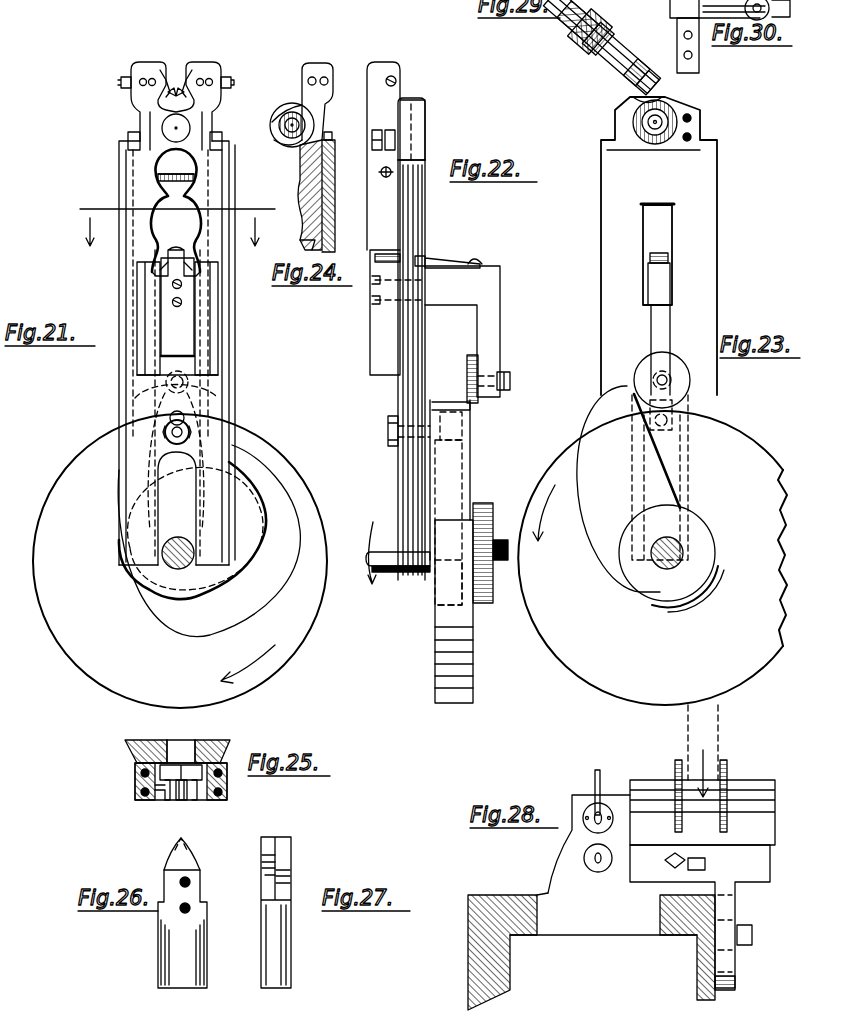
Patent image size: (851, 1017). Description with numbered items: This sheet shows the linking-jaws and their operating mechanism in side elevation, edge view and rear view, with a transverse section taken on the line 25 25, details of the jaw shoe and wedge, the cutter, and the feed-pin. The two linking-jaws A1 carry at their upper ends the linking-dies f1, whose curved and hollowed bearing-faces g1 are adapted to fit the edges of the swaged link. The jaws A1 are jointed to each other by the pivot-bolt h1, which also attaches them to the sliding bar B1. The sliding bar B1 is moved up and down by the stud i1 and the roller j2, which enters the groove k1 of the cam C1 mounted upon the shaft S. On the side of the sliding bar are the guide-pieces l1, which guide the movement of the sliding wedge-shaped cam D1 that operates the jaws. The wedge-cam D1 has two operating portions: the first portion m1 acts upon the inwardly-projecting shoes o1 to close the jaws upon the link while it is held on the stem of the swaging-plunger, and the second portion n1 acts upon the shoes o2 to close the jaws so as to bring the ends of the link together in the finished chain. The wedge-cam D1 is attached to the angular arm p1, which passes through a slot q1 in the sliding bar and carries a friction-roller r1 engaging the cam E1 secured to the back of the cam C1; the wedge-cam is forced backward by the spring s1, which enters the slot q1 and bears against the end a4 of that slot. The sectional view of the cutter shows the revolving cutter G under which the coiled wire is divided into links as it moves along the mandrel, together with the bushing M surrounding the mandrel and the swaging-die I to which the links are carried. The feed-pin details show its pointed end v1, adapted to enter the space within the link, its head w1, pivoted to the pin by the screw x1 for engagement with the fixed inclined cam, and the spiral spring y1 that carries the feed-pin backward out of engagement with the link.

In FIG. 21, the sliding bar B1 is at (229, 166).
In FIG. 22, the sliding bar B1 is at (420, 232).
In FIG. 23, the sliding bar B1 is at (703, 270).
In FIG. 25, the sliding bar B1 is at (226, 748).
In FIG. 21, the linking-jaws A1 is at (147, 105).
In FIG. 24, the linking-jaws A1 is at (322, 96).
In FIG. 22, the linking-jaws A1 is at (368, 80).
In FIG. 25, the linking-jaws A1 is at (228, 790).
In FIG. 21, the curved and hollowed bearing-faces g1 is at (164, 78).
In FIG. 25, the curved and hollowed bearing-faces g1 is at (140, 787).
In FIG. 21, the linking-dies f1 is at (172, 88).
In FIG. 21, the pivot-bolt h1 is at (186, 130).
In FIG. 21, the first operating portion of wedge-cam m1 is at (176, 212).
In FIG. 25, the first operating portion of wedge-cam m1 is at (186, 802).
In FIG. 26, the first operating portion of wedge-cam m1 is at (187, 862).
In FIG. 27, the first operating portion of wedge-cam m1 is at (262, 860).
In FIG. 21, the inwardly-projecting shoes o1 is at (179, 245).
In FIG. 24, the inwardly-projecting shoes o1 is at (308, 240).
In FIG. 25, the inwardly-projecting shoes o1 is at (165, 802).
In FIG. 21, the section line 25 25 is at (172, 217).
In FIG. 21, the sliding wedge-shaped cam D1 is at (177, 303).
In FIG. 22, the sliding wedge-shaped cam D1 is at (375, 258).
In FIG. 26, the sliding wedge-shaped cam D1 is at (198, 920).
In FIG. 27, the sliding wedge-shaped cam D1 is at (262, 908).
In FIG. 21, the guide-pieces l1 is at (137, 300).
In FIG. 22, the guide-pieces l1 is at (382, 332).
In FIG. 21, the stud i1 is at (189, 428).
In FIG. 22, the stud i1 is at (400, 444).
In FIG. 21, the cam E1 is at (200, 420).
In FIG. 22, the cam E1 is at (472, 420).
In FIG. 23, the cam E1 is at (596, 410).
In FIG. 21, the groove of cam k1 is at (280, 498).
In FIG. 22, the groove of cam k1 is at (440, 598).
In FIG. 21, the shaft S is at (176, 570).
In FIG. 22, the shaft S is at (366, 550).
In FIG. 23, the shaft S is at (680, 565).
In FIG. 21, the cam C1 is at (312, 526).
In FIG. 22, the cam C1 is at (446, 636).
In FIG. 23, the cam C1 is at (748, 436).
In FIG. 22, the end of slot a4 is at (412, 215).
In FIG. 23, the end of slot a4 is at (664, 207).
In FIG. 22, the spring s1 is at (430, 262).
In FIG. 23, the spring s1 is at (668, 258).
In FIG. 22, the angular arm p1 is at (490, 292).
In FIG. 23, the angular arm p1 is at (680, 360).
In FIG. 22, the friction-roller r1 is at (467, 362).
In FIG. 22, the roller j2 is at (434, 408).
In FIG. 23, the slot q1 is at (665, 242).
In FIG. 23, the second operating portion of wedge-cam n1 is at (665, 298).
In FIG. 25, the second operating portion of wedge-cam n1 is at (186, 772).
In FIG. 26, the second operating portion of wedge-cam n1 is at (200, 890).
In FIG. 27, the second operating portion of wedge-cam n1 is at (288, 860).
In FIG. 25, the shoes o2 is at (181, 758).
In FIG. 28, the swaging-die I is at (588, 866).
In FIG. 28, the bushing M is at (585, 810).
In FIG. 28, the revolving cutter G is at (598, 772).
In FIG. 29, the screw x1 is at (596, 54).
In FIG. 29, the spiral spring y1 is at (585, 37).
In FIG. 29, the head w1 is at (655, 66).
In FIG. 29, the pointed end v1 is at (616, 31).